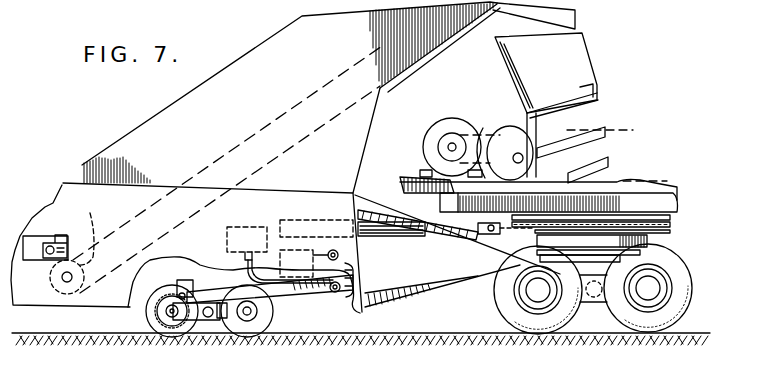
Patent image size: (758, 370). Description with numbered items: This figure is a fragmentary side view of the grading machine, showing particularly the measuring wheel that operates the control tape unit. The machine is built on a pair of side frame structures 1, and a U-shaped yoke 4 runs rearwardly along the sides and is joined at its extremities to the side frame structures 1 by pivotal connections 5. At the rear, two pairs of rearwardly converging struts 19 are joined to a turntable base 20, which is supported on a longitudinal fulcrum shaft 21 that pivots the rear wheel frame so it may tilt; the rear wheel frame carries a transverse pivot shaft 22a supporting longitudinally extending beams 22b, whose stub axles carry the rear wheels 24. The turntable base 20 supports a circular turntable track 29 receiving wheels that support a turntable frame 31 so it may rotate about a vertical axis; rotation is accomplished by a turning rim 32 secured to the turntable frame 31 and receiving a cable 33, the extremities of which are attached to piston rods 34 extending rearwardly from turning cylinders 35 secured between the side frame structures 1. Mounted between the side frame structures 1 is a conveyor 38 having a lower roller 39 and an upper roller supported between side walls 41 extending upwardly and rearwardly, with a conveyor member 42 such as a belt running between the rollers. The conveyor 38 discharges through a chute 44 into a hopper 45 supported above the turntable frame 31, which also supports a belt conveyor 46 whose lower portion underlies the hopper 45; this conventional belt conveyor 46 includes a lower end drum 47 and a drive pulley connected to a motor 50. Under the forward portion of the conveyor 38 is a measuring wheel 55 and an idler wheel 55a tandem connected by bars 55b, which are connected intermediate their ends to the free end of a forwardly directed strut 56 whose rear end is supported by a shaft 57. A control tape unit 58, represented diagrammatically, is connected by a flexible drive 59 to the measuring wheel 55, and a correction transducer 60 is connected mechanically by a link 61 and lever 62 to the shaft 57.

The side frame structure 1 is at (26, 311).
The U-shaped yoke 4 is at (37, 234).
The pivotal connection 5 is at (50, 246).
The rearwardly converging strut 19 is at (480, 272).
The turntable base 20 is at (603, 254).
The longitudinal fulcrum shaft 21 is at (580, 263).
The transverse pivot shaft 22a is at (572, 315).
The longitudinally extending beam 22b is at (676, 312).
The rear wheel 24 is at (508, 300).
The circular turntable track 29 is at (648, 240).
The turntable frame 31 is at (405, 178).
The turning rim 32 is at (672, 216).
The cable 33 is at (672, 226).
The piston rod 34 is at (438, 238).
The turning cylinder 35 is at (375, 237).
The conveyor 38 is at (264, 118).
The lower roller 39 is at (86, 232).
The side wall 41 is at (281, 42).
The conveyor member 42 is at (221, 148).
The chute 44 is at (575, 20).
The hopper 45 is at (576, 58).
The belt conveyor 46 is at (517, 115).
The lower end drum 47 is at (500, 142).
The motor 50 is at (447, 128).
The measuring wheel 55 is at (150, 316).
The idler wheel 55a is at (270, 286).
The bar 55b is at (167, 307).
The forwardly directed strut 56 is at (300, 322).
The shaft 57 is at (328, 292).
The control tape unit 58 is at (248, 227).
The flexible drive 59 is at (208, 283).
The correction transducer 60 is at (313, 250).
The link 61 is at (324, 255).
The lever 62 is at (356, 282).